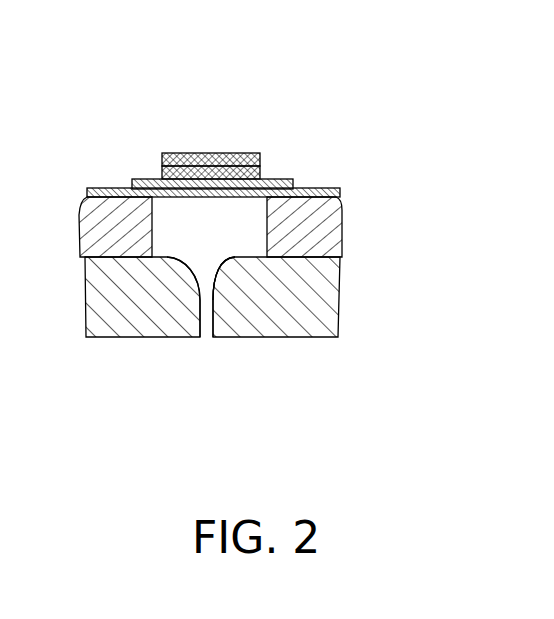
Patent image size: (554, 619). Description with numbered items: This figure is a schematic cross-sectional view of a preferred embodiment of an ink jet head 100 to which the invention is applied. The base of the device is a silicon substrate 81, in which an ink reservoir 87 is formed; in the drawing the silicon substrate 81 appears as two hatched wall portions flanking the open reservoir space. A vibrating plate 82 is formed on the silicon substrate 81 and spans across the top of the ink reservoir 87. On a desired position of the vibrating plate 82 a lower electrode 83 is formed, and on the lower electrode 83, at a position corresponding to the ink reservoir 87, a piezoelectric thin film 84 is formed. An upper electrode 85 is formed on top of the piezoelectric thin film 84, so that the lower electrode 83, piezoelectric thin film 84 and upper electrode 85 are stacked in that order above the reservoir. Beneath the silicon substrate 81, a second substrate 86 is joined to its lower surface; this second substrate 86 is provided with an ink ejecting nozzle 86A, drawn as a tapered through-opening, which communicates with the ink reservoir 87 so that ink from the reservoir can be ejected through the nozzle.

The ink jet head 100 is at (427, 49).
The silicon substrate 81 is at (87, 240).
The vibrating plate 82 is at (338, 188).
The lower electrode 83 is at (223, 162).
The piezoelectric thin film 84 is at (177, 156).
The upper electrode 85 is at (222, 153).
The second substrate 86 is at (180, 318).
The ink ejecting nozzle 86A is at (207, 300).
The ink reservoir 87 is at (250, 247).